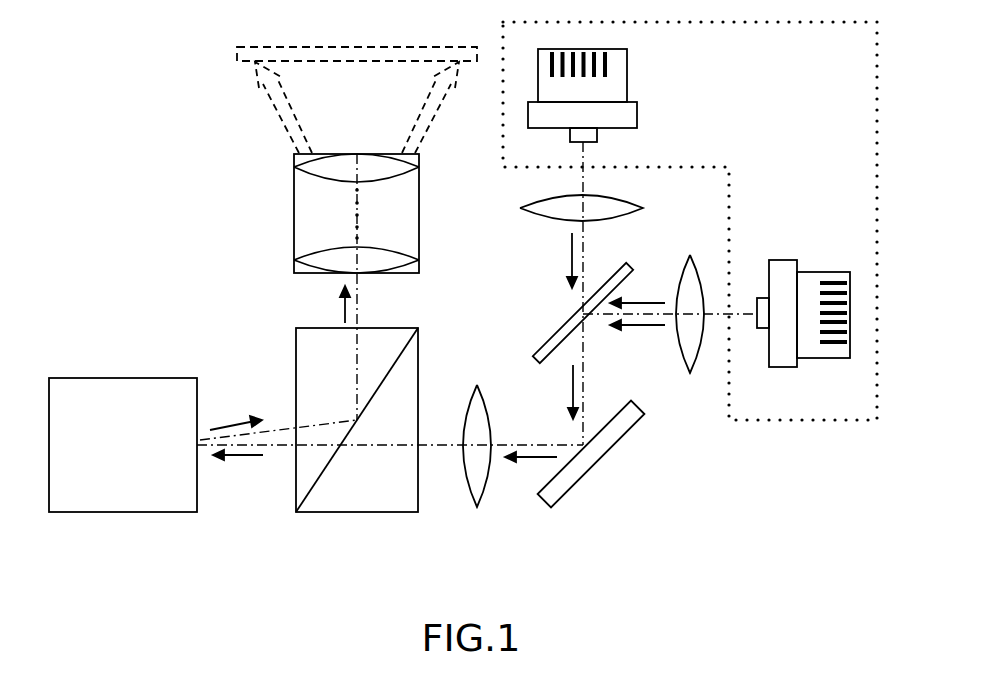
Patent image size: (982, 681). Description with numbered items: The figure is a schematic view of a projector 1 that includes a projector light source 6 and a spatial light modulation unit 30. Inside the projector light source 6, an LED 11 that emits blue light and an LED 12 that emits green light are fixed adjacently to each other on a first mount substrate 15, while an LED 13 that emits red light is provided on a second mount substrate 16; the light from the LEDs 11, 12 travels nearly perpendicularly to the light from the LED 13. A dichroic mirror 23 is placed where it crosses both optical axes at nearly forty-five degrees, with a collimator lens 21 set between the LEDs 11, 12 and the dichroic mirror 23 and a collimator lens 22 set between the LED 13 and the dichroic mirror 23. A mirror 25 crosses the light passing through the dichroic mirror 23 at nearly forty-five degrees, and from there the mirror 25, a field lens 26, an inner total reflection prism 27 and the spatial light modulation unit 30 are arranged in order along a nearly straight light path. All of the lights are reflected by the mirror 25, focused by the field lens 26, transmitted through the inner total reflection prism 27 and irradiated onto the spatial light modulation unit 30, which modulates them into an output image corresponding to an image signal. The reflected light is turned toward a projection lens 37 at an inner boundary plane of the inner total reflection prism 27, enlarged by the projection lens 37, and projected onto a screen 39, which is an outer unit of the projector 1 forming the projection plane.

The projector 1 is at (131, 140).
The screen 39 is at (247, 57).
The projection lens 37 is at (318, 195).
The inner total reflection prism 27 is at (358, 498).
The spatial light modulation unit 30 is at (143, 498).
The field lens 26 is at (475, 485).
The mirror 25 is at (573, 472).
The dichroic mirror 23 is at (568, 327).
The collimator lens 22 is at (543, 208).
The collimator lens 21 is at (690, 352).
The projector light source 6 is at (817, 423).
The mount substrate 16 is at (608, 90).
The LED 13 is at (582, 135).
The mount substrate 15 is at (807, 288).
The LED 11 is at (762, 330).
The LED 12 is at (760, 302).